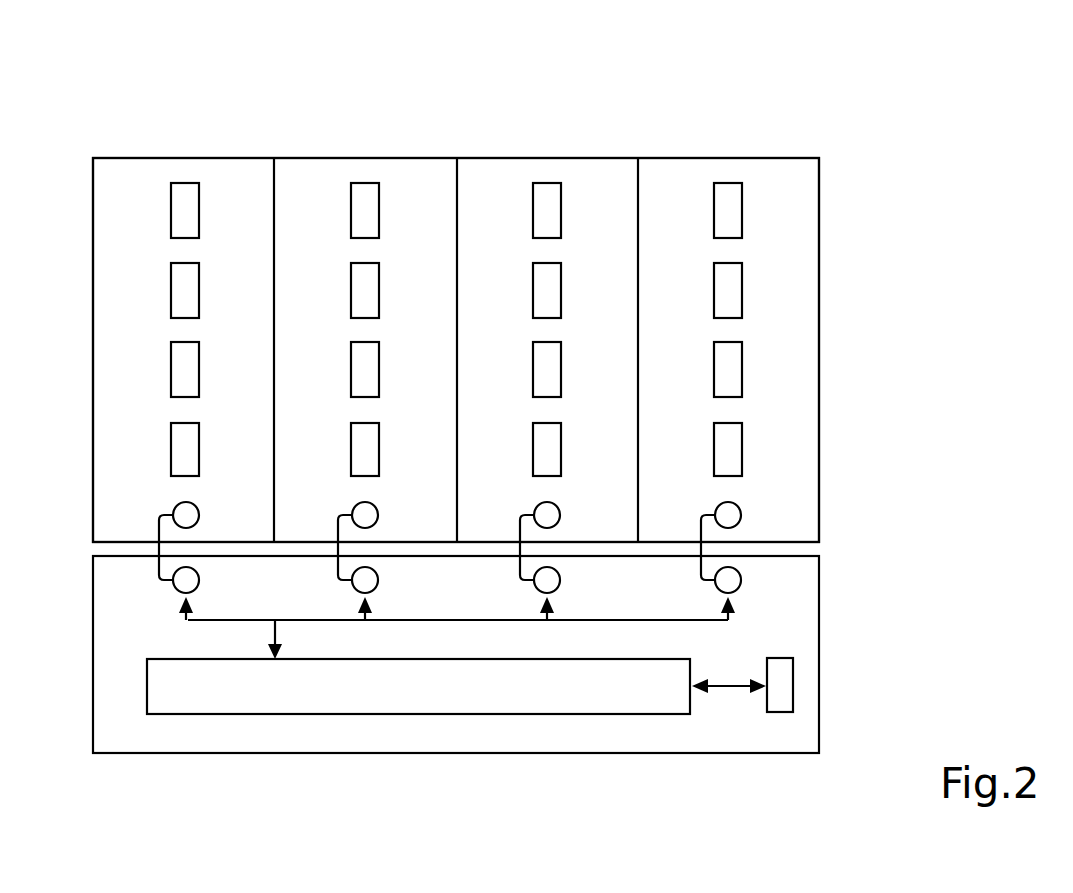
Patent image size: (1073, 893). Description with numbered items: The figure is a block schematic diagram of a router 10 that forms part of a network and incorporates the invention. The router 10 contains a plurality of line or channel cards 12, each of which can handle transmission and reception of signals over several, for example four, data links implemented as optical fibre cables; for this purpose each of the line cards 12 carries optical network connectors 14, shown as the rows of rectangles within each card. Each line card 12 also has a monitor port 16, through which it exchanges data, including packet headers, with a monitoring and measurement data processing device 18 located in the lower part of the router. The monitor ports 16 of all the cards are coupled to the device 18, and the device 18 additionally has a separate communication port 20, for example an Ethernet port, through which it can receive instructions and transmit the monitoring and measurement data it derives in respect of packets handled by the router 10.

The router 10 is at (784, 95).
The line card 12 is at (819, 223).
The optical network connector 14 is at (743, 365).
The monitor port 16 is at (741, 513).
The monitoring and measurement data processing device 18 is at (472, 713).
The communication port 20 is at (795, 682).